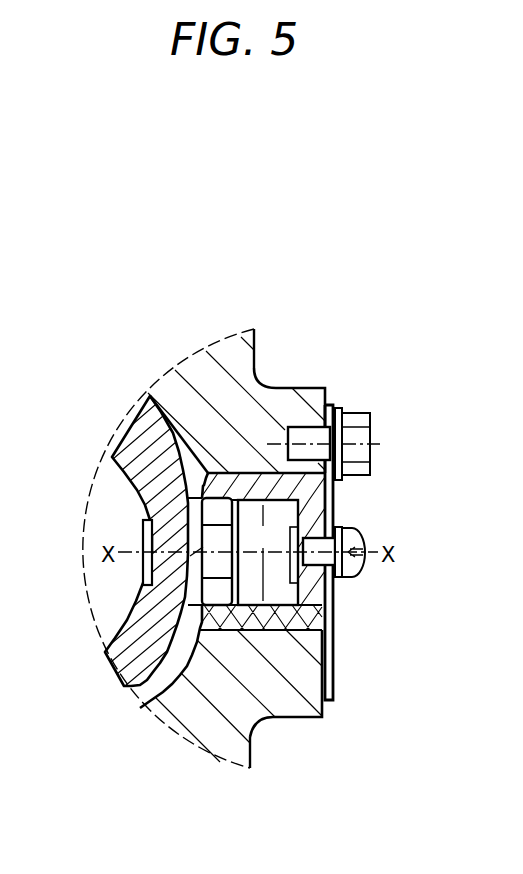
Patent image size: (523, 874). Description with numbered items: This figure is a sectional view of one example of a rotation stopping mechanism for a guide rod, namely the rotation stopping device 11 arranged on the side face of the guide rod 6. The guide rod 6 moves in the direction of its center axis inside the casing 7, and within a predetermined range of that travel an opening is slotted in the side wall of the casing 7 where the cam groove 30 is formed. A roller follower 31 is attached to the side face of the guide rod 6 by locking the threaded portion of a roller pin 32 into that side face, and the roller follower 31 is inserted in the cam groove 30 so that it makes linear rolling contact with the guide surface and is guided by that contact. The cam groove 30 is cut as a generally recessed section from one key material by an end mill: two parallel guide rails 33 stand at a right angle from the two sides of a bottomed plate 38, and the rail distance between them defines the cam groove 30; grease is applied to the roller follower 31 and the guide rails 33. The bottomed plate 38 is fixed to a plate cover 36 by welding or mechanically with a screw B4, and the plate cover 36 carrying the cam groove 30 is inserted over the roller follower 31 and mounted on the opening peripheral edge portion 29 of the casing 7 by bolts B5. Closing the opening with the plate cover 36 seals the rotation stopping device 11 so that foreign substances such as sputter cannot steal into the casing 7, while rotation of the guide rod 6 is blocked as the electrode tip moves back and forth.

The rotation stopping device 11 is at (381, 326).
The guide rod 6 is at (130, 482).
The casing 7 is at (207, 732).
The opening peripheral edge portion 29 is at (306, 390).
The cam groove 30 is at (340, 490).
The roller follower 31 is at (277, 593).
The roller pin 32 is at (148, 543).
The guide rails 33 is at (265, 473).
The plate cover 36 is at (330, 678).
The bottomed plate 38 is at (340, 621).
The screw B4 is at (357, 528).
The bolts B5 is at (359, 412).